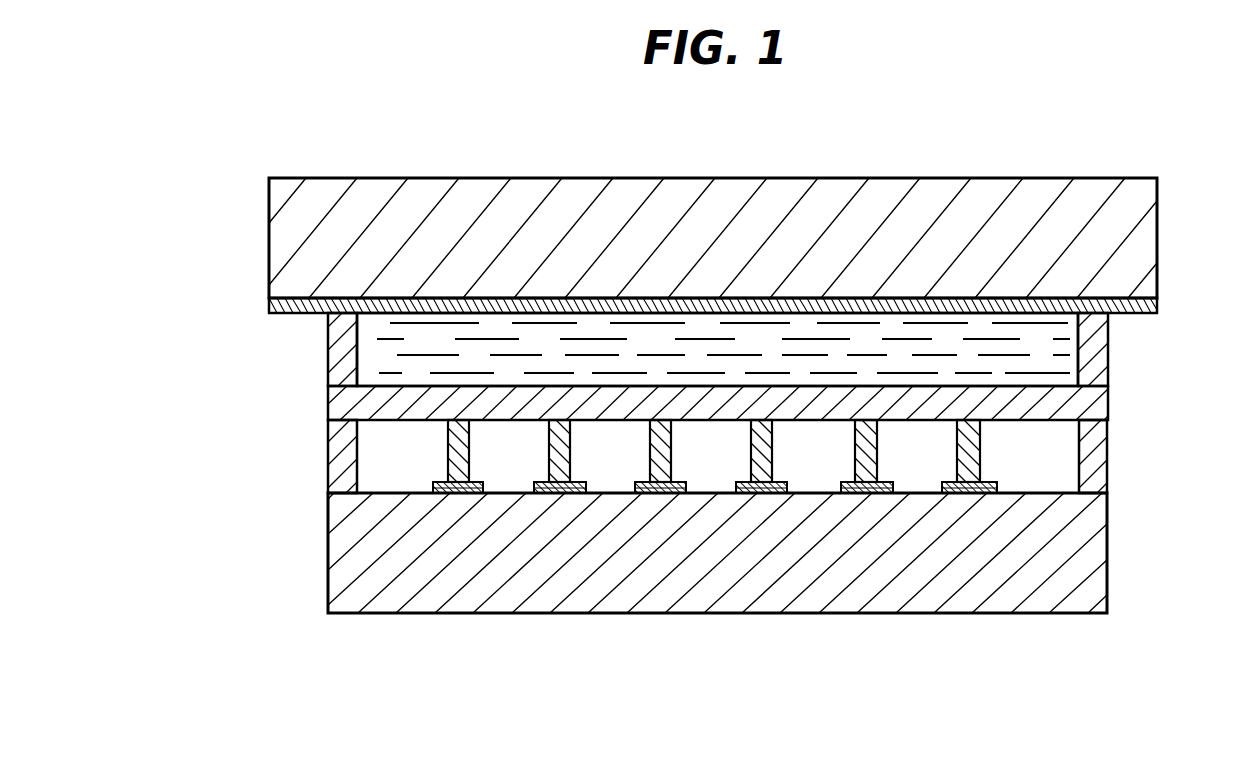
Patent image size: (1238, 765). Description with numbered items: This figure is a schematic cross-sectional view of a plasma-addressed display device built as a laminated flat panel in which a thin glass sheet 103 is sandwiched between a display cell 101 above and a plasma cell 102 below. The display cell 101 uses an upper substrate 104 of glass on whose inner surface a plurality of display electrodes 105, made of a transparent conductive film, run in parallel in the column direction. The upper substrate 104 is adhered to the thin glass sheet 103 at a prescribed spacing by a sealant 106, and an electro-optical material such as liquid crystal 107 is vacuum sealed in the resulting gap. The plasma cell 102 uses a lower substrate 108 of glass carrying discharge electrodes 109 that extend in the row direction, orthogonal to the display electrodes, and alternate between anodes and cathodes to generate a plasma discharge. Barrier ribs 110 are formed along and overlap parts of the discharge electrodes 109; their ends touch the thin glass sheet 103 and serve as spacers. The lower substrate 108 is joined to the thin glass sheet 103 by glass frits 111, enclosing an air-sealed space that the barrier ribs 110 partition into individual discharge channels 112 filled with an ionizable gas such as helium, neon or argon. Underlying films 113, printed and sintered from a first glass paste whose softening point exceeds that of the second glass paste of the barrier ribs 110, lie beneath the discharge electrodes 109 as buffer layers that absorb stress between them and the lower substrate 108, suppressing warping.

The display cell 101 is at (253, 185).
The plasma cell 102 is at (258, 392).
The thin glass sheet 103 is at (1095, 400).
The upper substrate 104 is at (383, 205).
The display electrodes 105 is at (538, 300).
The sealant 106 is at (1092, 344).
The liquid crystal 107 is at (678, 322).
The lower substrate 108 is at (395, 598).
The discharge electrodes 109 is at (895, 483).
The barrier ribs 110 is at (980, 448).
The glass frits 111 is at (1093, 462).
The discharge channels 112 is at (708, 480).
The underlying films 113 is at (848, 493).